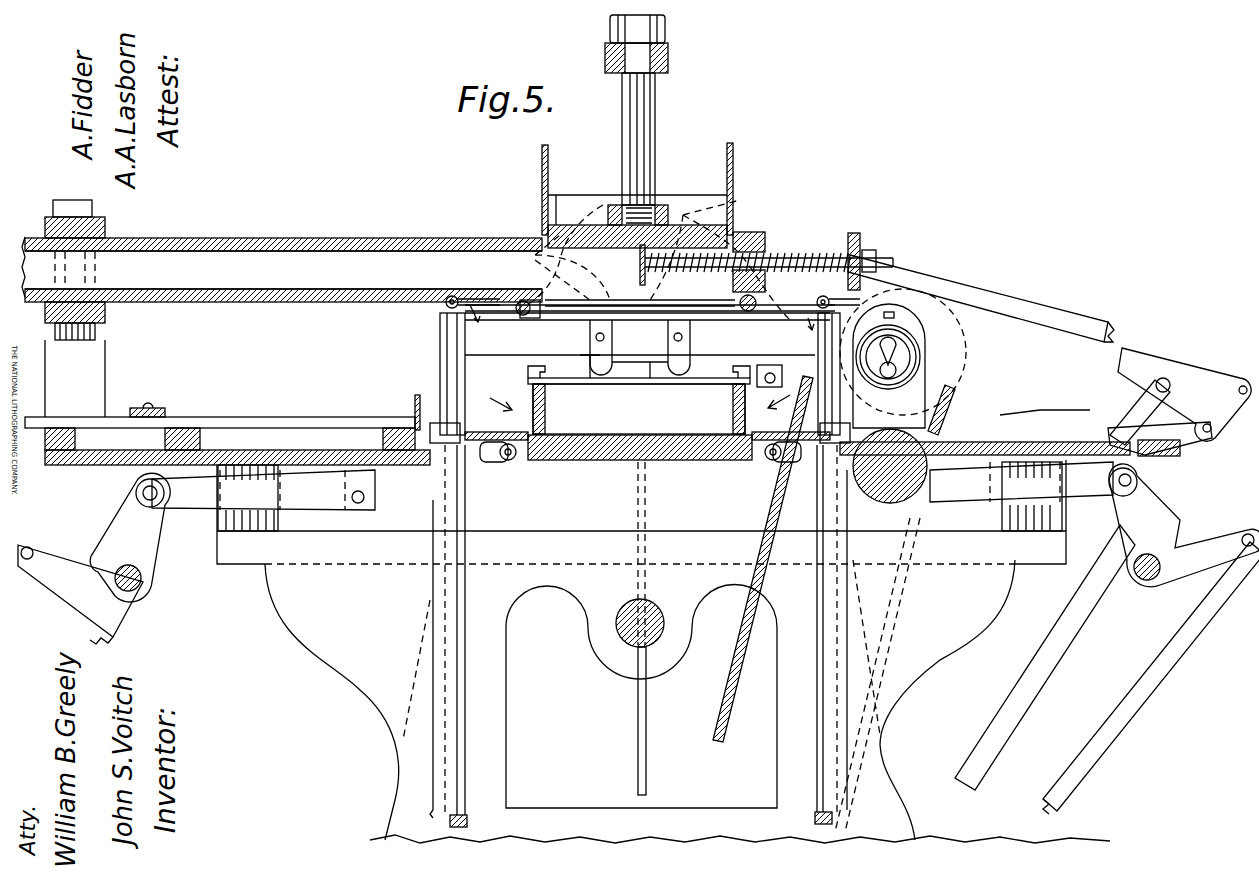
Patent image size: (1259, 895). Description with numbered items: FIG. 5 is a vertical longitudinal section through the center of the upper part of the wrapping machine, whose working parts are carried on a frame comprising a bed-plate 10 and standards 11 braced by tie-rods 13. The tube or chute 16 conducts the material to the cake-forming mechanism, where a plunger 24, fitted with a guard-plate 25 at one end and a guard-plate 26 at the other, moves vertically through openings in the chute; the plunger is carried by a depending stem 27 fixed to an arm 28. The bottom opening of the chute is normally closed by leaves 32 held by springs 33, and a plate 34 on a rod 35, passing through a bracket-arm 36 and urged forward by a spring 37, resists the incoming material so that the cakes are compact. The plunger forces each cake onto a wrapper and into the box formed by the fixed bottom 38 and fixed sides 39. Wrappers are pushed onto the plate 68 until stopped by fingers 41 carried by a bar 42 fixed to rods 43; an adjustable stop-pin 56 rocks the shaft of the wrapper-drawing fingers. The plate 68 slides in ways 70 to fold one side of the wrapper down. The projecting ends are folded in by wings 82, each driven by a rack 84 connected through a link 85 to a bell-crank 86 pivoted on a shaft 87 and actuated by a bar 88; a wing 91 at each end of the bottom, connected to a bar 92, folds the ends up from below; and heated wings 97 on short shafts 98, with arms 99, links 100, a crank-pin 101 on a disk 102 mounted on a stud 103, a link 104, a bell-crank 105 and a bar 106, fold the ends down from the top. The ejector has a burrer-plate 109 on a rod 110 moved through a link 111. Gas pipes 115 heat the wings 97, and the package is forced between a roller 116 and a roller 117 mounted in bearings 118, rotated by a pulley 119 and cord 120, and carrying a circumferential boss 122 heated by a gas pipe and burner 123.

The bed-plate 10 is at (238, 465).
The standards 11 is at (663, 651).
The tie-rods 13 is at (630, 607).
The tube or chute 16 is at (378, 238).
The plunger 24 is at (565, 225).
The guard-plate 25 is at (542, 160).
The guard-plate 26 is at (733, 160).
The depending stem 27 is at (655, 120).
The arm 28 is at (668, 52).
The leaves 32 is at (592, 326).
The springs 33 is at (666, 324).
The plate 34 is at (640, 282).
The rod 35 is at (822, 256).
The bracket-arm 36 is at (860, 236).
The spring 37 is at (788, 254).
The bottom 38 is at (600, 434).
The sides 39 is at (710, 409).
The fingers 41 is at (622, 365).
The bar 42 is at (577, 365).
The rods 43 is at (467, 821).
The adjustable stop-pin 56 is at (782, 375).
The plate 68 is at (655, 384).
The ways 70 is at (528, 369).
The wings 82 is at (640, 402).
The rack 84 is at (350, 436).
The link 85 is at (637, 486).
The bell-crank 86 is at (674, 533).
The shafts 87 is at (141, 580).
The bar 88 is at (108, 620).
The wing 91 is at (506, 461).
The bar 92 is at (440, 612).
The wings 97 is at (440, 322).
The short shaft 98 is at (756, 303).
The arm 99 is at (528, 298).
The links 100 is at (555, 262).
The crank-pin 101 is at (683, 215).
The disk 102 is at (603, 205).
The stud 103 is at (620, 300).
The link 104 is at (1105, 334).
The bell-crank 105 is at (1210, 430).
The bar 106 is at (1140, 408).
The burrer-plate 109 is at (414, 400).
The rod 110 is at (312, 417).
The link 111 is at (160, 408).
The gas pipes 115 is at (452, 296).
The roller 116 is at (905, 490).
The roller 117 is at (910, 357).
The bearings 118 is at (920, 380).
The pulley 119 is at (950, 362).
The cord 120 is at (950, 425).
The circumferential boss 122 is at (915, 340).
The gas pipe and burner 123 is at (890, 378).